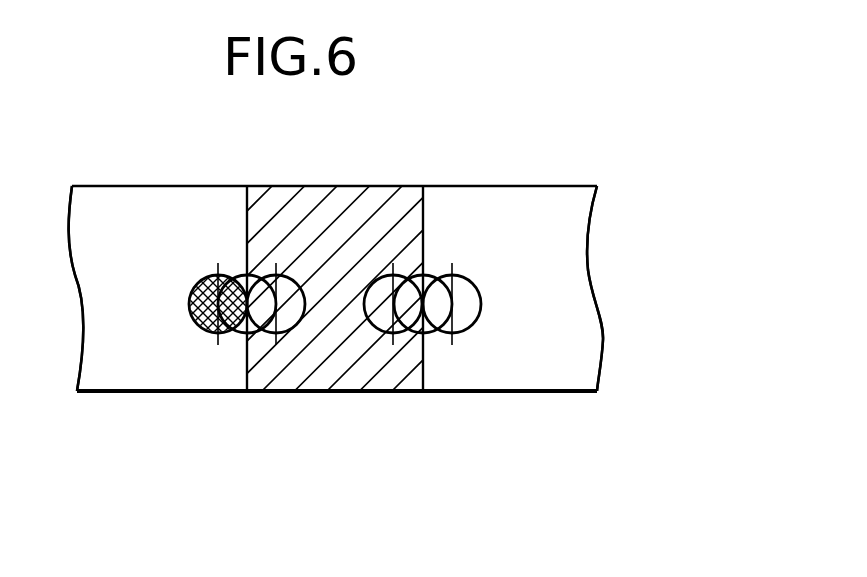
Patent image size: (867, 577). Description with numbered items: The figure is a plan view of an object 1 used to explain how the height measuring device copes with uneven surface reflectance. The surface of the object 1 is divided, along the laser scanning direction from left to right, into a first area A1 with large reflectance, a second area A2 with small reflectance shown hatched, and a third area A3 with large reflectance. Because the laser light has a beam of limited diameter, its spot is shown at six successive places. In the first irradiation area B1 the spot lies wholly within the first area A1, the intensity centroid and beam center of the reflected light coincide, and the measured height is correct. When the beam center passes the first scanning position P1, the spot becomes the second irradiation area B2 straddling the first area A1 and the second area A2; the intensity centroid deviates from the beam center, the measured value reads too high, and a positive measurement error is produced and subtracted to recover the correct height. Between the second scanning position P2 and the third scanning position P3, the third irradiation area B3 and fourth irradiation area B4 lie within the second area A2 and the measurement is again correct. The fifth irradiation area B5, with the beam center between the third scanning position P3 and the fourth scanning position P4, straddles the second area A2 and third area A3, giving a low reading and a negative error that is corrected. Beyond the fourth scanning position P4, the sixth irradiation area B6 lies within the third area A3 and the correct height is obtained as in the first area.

The object 1 is at (552, 218).
The first area A1 is at (140, 363).
The second area A2 is at (347, 362).
The third area A3 is at (530, 350).
The first irradiation area B1 is at (205, 332).
The second irradiation area B2 is at (262, 330).
The third irradiation area B3 is at (294, 331).
The fourth irradiation area B4 is at (376, 334).
The fifth irradiation area B5 is at (433, 333).
The sixth irradiation area B6 is at (464, 332).
The first scanning position P1 is at (217, 262).
The second scanning position P2 is at (277, 263).
The third scanning position P3 is at (394, 265).
The fourth scanning position P4 is at (453, 268).